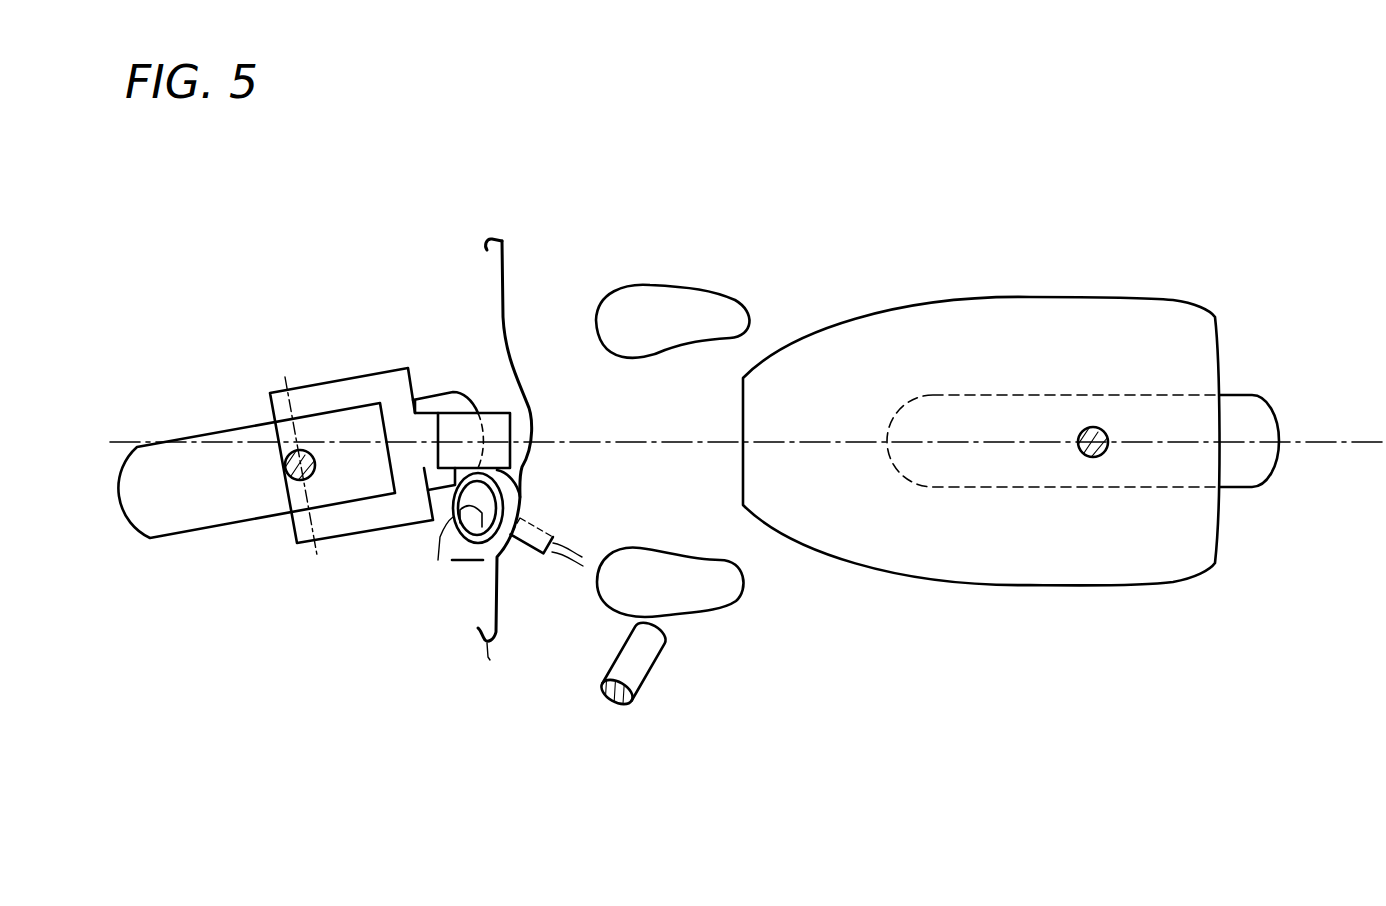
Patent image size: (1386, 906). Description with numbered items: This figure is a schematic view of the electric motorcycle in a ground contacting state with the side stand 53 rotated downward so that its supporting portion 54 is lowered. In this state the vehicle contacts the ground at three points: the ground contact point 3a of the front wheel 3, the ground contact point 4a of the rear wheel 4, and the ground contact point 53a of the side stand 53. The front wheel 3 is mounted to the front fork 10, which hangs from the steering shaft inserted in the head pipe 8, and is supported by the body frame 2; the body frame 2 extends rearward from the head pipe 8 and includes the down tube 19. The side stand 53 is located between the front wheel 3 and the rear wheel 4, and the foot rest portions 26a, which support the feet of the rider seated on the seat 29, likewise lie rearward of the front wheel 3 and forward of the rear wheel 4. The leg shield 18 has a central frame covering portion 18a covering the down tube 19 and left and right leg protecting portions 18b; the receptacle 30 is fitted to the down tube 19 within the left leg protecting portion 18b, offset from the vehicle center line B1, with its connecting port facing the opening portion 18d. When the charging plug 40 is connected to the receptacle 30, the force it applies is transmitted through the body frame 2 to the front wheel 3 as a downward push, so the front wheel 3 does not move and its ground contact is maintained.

The body frame 2 is at (497, 412).
The front wheel 3 is at (239, 428).
The ground contact point of the front wheel 3a is at (306, 465).
The rear wheel 4 is at (1248, 395).
The ground contact point of the rear wheel 4a is at (1100, 437).
The head pipe 8 is at (483, 411).
The front fork 10 is at (320, 383).
The leg shield 18 is at (507, 332).
The frame covering portion 18a is at (531, 407).
The leg protecting portions 18b is at (503, 272).
The opening portion 18d is at (438, 560).
The down tube 19 is at (521, 495).
The foot rest portions 26a is at (668, 285).
The seat 29 is at (1110, 298).
The receptacle 30 is at (462, 518).
The charging plug 40 is at (533, 530).
The side stand 53 is at (665, 658).
The ground contact point of the side stand 53a is at (623, 703).
The supporting portion 54 is at (650, 677).
The center line B1 is at (1327, 440).